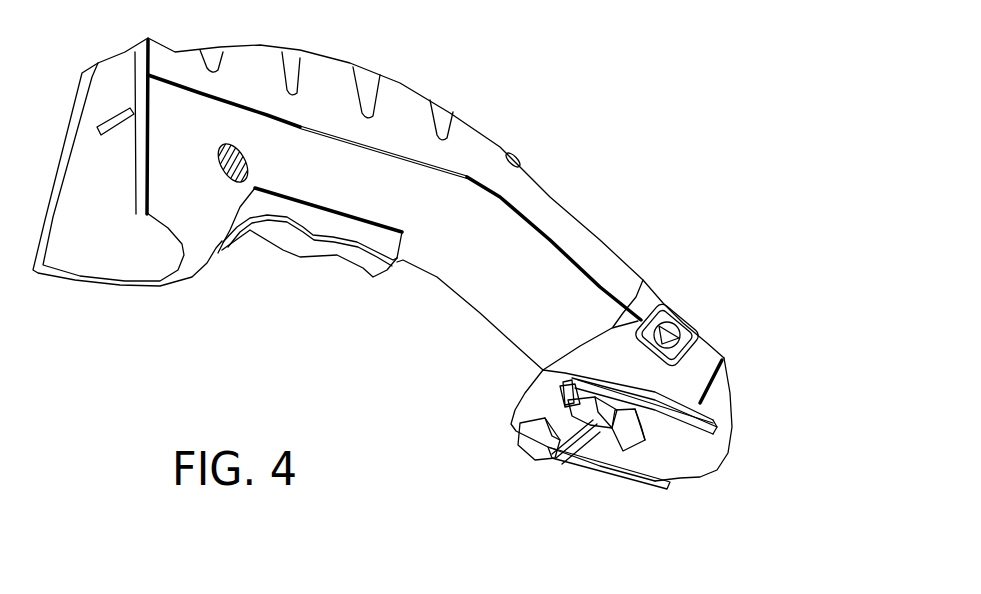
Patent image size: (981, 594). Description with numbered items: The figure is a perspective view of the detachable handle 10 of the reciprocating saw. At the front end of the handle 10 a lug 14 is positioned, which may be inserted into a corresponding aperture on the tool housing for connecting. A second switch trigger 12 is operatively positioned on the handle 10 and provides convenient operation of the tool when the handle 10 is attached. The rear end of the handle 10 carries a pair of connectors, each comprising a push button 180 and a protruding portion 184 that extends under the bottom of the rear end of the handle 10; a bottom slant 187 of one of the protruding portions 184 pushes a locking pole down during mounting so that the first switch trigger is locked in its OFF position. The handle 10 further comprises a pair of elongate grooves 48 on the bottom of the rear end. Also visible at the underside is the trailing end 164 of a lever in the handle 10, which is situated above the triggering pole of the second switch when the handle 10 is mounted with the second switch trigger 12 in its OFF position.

The handle 10 is at (550, 82).
The second switch trigger 12 is at (293, 245).
The lug 14 is at (124, 130).
The elongate grooves 48 is at (667, 410).
The trailing end 164 is at (657, 483).
The push button 180 is at (683, 314).
The protruding portion 184 is at (560, 392).
The bottom slant 187 is at (557, 459).